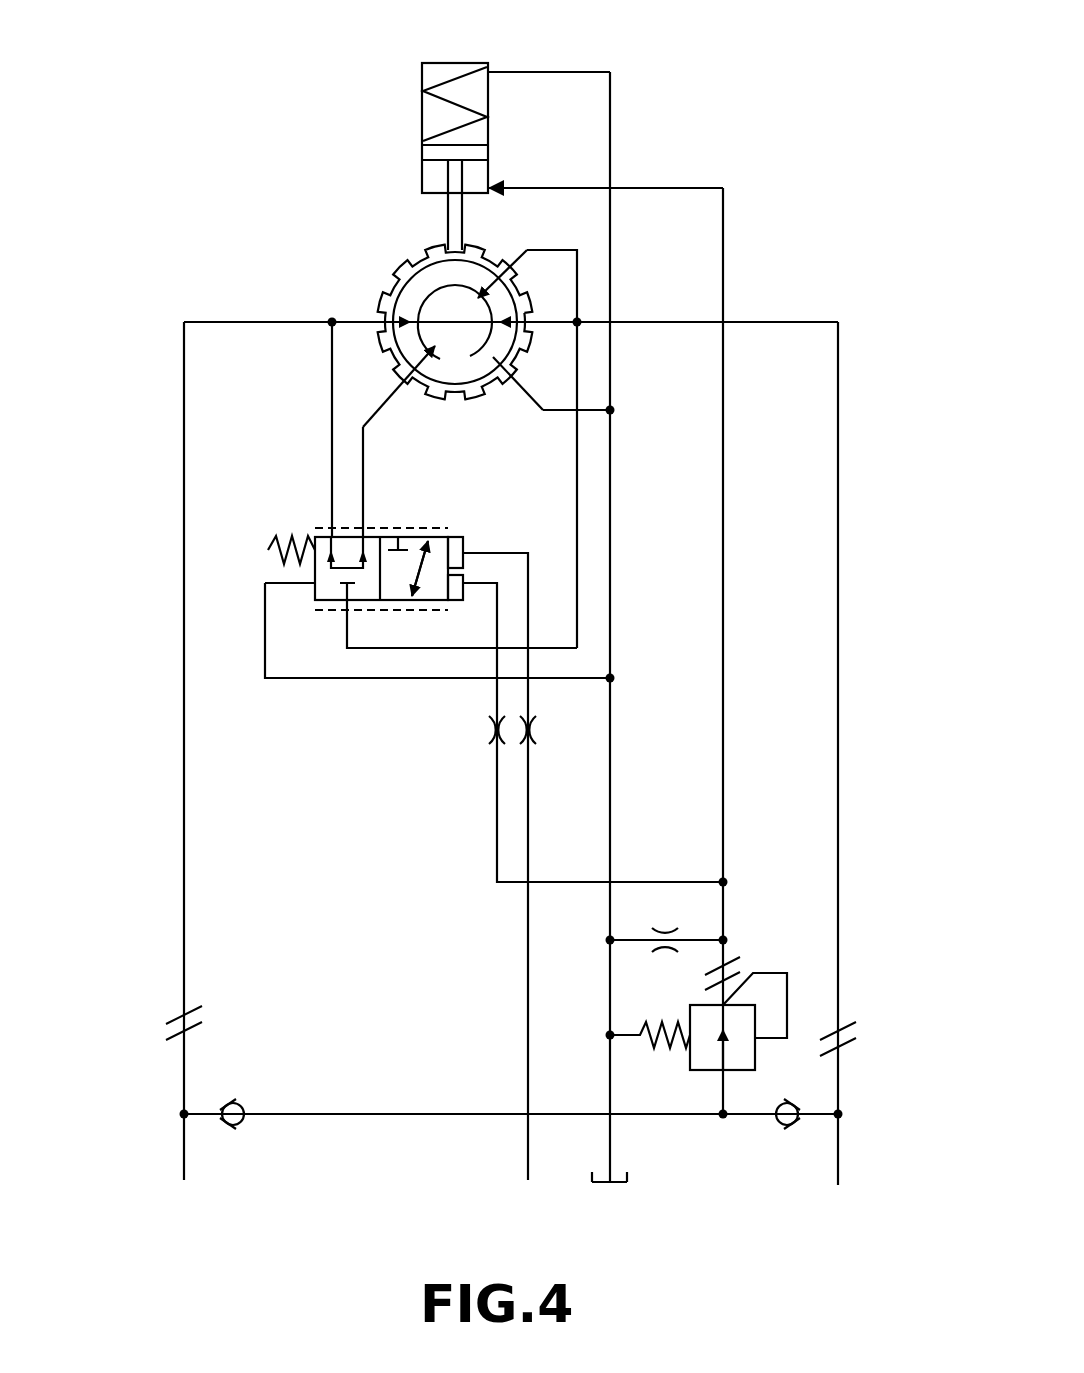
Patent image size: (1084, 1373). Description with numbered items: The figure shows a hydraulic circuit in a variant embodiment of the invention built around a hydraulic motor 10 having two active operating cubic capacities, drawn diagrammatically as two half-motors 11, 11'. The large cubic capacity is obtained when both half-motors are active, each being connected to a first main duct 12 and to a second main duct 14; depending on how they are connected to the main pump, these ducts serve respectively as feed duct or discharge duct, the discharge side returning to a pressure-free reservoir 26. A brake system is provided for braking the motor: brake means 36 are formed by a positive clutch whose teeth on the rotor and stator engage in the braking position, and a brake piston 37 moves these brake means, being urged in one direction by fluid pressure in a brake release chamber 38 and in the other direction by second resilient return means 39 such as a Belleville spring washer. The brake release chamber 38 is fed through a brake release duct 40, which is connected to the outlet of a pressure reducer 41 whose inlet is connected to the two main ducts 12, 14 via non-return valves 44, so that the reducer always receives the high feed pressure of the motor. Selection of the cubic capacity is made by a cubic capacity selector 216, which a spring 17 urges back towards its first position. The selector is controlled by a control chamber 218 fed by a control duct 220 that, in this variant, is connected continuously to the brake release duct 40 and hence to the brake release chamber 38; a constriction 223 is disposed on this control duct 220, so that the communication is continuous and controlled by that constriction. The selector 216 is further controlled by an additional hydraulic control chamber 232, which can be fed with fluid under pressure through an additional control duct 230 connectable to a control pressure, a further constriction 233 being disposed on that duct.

The hydraulic motor 10 is at (388, 248).
The half-motor 11 is at (454, 281).
The half-motor 11' is at (453, 390).
The first main duct 12 is at (184, 660).
The second main duct 14 is at (838, 698).
The spring 17 is at (268, 552).
The tank 26 is at (592, 1185).
The brake means 36 is at (453, 128).
The brake piston 37 is at (482, 153).
The brake release chamber 38 is at (430, 174).
The second resilient return means 39 is at (450, 76).
The brake release duct 40 is at (723, 246).
The pressure reducer 41 is at (778, 960).
The non-return valves 44 is at (246, 1130).
The cubic capacity selector 216 is at (391, 485).
The control chamber 218 is at (455, 592).
The control duct 220 is at (497, 886).
The constriction 223 is at (488, 730).
The additional control duct 230 is at (530, 805).
The additional hydraulic control chamber 232 is at (456, 545).
The constriction 233 is at (538, 730).